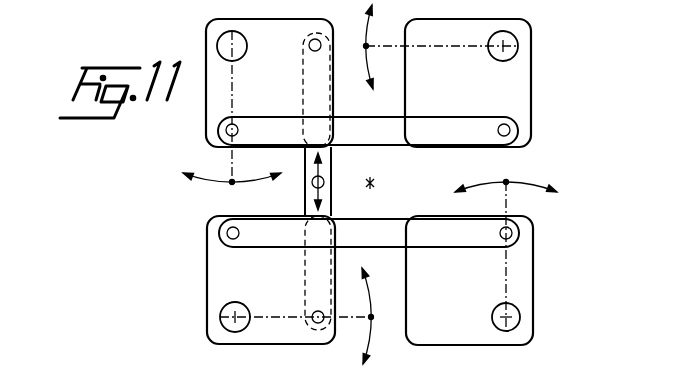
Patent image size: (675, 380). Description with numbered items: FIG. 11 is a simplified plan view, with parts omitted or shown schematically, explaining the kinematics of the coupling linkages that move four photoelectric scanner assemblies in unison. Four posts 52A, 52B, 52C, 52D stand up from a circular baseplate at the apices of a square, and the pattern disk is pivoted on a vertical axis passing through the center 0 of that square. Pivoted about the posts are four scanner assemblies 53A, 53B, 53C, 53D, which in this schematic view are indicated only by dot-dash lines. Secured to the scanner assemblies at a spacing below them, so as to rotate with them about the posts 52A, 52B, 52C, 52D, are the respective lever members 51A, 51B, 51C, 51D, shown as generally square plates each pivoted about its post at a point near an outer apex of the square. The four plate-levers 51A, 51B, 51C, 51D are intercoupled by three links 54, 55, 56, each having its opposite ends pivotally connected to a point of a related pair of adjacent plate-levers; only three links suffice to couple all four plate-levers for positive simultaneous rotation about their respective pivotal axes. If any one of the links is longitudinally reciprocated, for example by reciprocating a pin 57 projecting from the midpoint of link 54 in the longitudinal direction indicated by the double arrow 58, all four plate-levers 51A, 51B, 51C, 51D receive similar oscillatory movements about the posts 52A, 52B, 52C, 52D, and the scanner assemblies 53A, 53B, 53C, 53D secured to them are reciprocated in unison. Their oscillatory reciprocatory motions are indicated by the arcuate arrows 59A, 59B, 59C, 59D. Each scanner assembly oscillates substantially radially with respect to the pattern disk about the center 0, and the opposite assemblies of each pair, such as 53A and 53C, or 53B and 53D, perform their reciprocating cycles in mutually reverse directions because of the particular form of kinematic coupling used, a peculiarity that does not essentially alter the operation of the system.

The lever member 51A is at (287, 32).
The lever member 51B is at (460, 33).
The lever member 51C is at (527, 271).
The lever member 51D is at (226, 268).
The post 52A is at (228, 42).
The post 52B is at (506, 46).
The post 52C is at (512, 318).
The post 52D is at (231, 317).
The scanner assembly 53A is at (230, 90).
The scanner assembly 53B is at (368, 45).
The scanner assembly 53C is at (507, 192).
The scanner assembly 53D is at (366, 320).
The link 54 is at (306, 208).
The link 55 is at (440, 127).
The link 56 is at (448, 232).
The pin 57 is at (311, 180).
The double arrow 58 is at (322, 179).
The arcuate arrow 59A is at (207, 187).
The arcuate arrow 59B is at (363, 60).
The arcuate arrow 59C is at (530, 178).
The arcuate arrow 59D is at (367, 298).
The center 0 is at (368, 188).